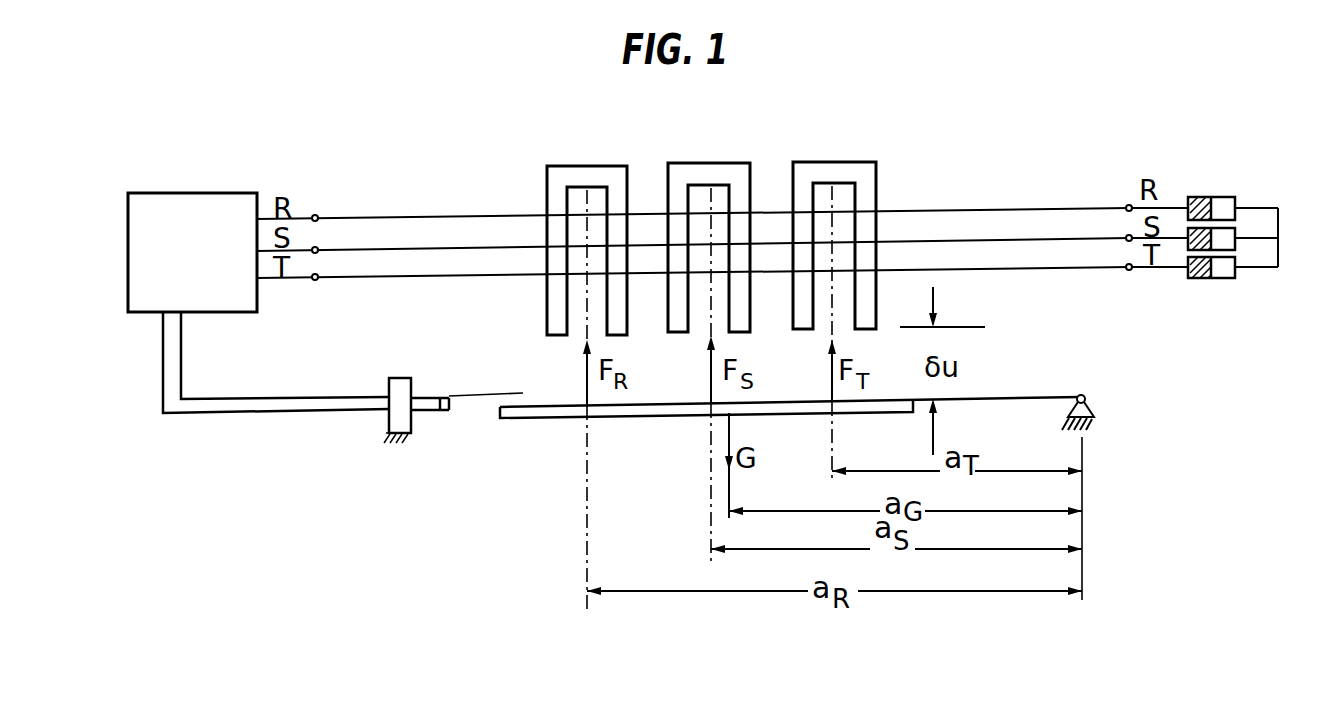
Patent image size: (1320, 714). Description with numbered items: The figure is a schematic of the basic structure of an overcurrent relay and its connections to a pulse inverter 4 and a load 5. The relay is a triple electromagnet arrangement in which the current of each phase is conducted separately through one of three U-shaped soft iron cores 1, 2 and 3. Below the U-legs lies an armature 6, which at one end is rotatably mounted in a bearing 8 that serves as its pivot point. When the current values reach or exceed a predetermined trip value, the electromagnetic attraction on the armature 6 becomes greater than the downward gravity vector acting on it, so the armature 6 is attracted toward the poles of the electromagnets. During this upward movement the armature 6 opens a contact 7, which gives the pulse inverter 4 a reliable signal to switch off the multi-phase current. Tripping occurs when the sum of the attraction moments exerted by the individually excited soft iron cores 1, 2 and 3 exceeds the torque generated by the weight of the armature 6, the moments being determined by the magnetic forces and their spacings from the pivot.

The U-shaped soft iron core 1 is at (630, 180).
The U-shaped soft iron core 2 is at (756, 180).
The U-shaped soft iron core 3 is at (874, 180).
The pulse inverter 4 is at (240, 193).
The load 5 is at (1216, 197).
The armature 6 is at (656, 417).
The contact 7 is at (443, 411).
The bearing 8 is at (1084, 395).